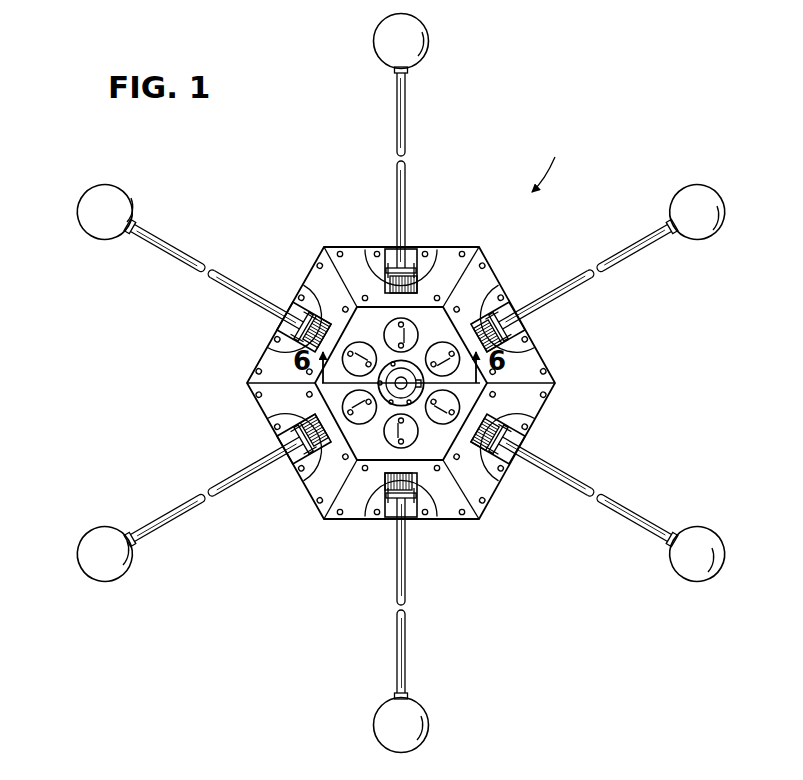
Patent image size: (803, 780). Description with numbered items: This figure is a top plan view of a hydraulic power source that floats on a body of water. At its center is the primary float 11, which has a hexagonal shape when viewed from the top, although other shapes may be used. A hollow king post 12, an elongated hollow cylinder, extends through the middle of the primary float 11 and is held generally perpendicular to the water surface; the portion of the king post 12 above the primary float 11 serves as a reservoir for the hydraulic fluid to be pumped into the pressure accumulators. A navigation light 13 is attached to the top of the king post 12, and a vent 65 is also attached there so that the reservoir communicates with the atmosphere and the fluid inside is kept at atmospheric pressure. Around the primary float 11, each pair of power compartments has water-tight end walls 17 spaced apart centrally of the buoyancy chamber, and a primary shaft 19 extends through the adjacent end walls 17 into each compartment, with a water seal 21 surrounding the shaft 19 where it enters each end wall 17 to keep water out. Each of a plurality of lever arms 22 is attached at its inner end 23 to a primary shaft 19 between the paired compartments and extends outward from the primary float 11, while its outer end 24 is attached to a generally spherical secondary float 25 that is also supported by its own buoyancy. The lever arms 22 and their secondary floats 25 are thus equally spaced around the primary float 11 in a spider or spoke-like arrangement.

The primary float 11 is at (250, 398).
The king post 12 is at (410, 370).
The navigation light 13 is at (378, 386).
The end walls 17 is at (378, 403).
The primary shaft 19 is at (394, 353).
The water seal 21 is at (397, 397).
The lever arm 22 is at (401, 383).
The inner end 23 is at (387, 379).
The outer end 24 is at (407, 386).
The secondary float 25 is at (410, 383).
The vent 65 is at (421, 386).